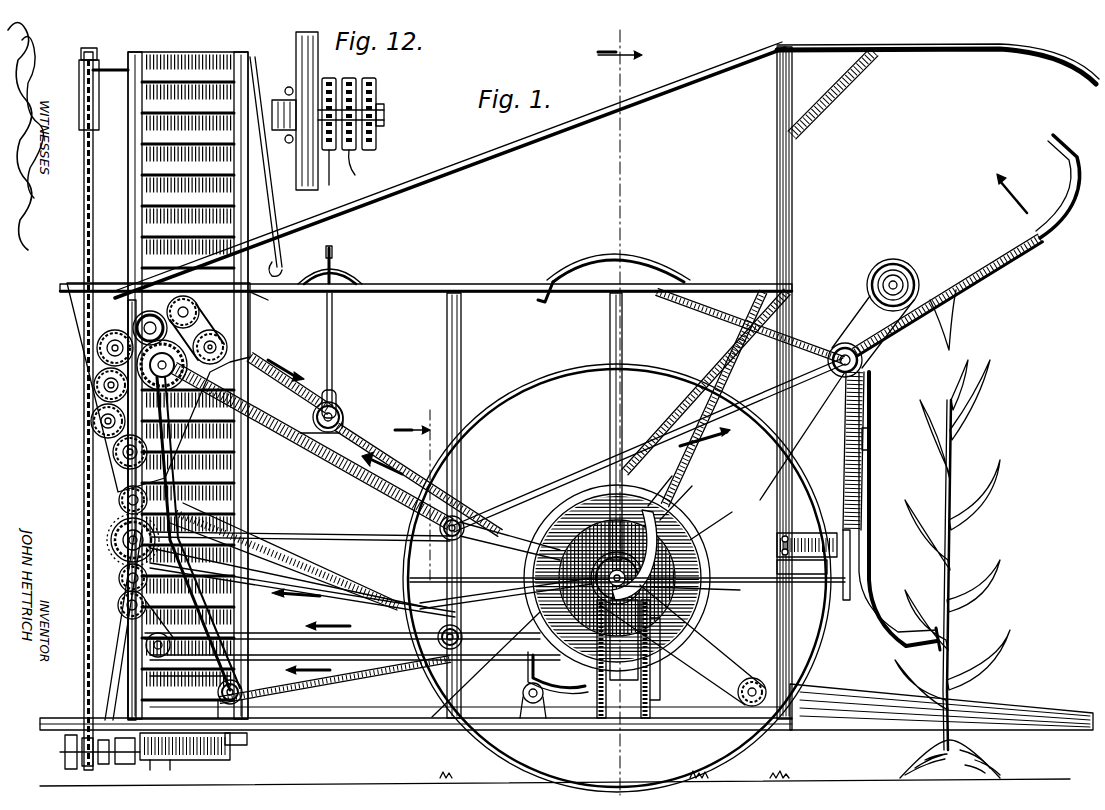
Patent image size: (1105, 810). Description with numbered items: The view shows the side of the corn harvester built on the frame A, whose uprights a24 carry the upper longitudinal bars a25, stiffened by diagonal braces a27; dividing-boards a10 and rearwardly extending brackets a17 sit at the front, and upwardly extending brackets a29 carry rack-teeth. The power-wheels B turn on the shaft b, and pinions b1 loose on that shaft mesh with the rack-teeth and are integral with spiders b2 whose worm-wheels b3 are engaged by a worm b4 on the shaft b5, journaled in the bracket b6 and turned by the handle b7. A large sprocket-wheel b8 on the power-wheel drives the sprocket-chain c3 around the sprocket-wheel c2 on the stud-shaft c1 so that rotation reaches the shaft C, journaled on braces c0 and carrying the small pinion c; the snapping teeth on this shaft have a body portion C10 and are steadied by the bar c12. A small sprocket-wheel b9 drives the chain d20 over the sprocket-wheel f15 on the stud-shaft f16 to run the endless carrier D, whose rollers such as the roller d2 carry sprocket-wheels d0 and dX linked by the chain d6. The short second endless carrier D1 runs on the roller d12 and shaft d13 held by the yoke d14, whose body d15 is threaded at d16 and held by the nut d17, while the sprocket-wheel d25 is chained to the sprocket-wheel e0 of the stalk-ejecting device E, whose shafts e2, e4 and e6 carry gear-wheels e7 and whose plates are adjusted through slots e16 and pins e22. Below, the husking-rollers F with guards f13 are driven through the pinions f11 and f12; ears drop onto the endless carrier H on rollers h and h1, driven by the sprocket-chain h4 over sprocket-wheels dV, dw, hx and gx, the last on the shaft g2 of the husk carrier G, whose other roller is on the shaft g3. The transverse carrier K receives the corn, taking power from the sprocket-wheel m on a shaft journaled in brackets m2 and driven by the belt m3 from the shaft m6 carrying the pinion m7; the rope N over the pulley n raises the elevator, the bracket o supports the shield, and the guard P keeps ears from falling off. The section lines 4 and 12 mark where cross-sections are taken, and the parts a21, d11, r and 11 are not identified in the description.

In FIG. 12, the frame A is at (300, 42).
In FIG. 1, the frame A is at (468, 282).
In FIG. 12, the hub of sprocket plate a21 is at (306, 174).
In FIG. 12, the rope N is at (312, 190).
In FIG. 12, the sprocket-wheel dV is at (378, 100).
In FIG. 1, the sprocket-wheel dV is at (460, 516).
In FIG. 12, the stud-shaft f16 is at (386, 118).
In FIG. 1, the stud-shaft f16 is at (118, 578).
In FIG. 12, the roller d2 is at (331, 177).
In FIG. 12, the sprocket-wheel dX is at (360, 170).
In FIG. 1, the section line 4 is at (620, 410).
In FIG. 1, the bracket o is at (700, 78).
In FIG. 1, the tooth portion C10 is at (1005, 260).
In FIG. 1, the shaft C is at (892, 340).
In FIG. 1, the pinion c is at (858, 386).
In FIG. 1, the stud-shaft c1 is at (893, 274).
In FIG. 1, the sprocket-wheel c2 is at (916, 274).
In FIG. 1, the sprocket-chain c3 is at (862, 366).
In FIG. 1, the braces c0 is at (854, 326).
In FIG. 1, the bar c12 is at (868, 448).
In FIG. 1, the diagonal braces a27 is at (726, 352).
In FIG. 1, the upper longitudinal bars a25 is at (396, 282).
In FIG. 1, the uprights a24 is at (446, 368).
In FIG. 1, the section line 12 is at (418, 488).
In FIG. 1, the pins e22 is at (84, 287).
In FIG. 1, the belt m3 is at (108, 668).
In FIG. 1, the pulley n is at (266, 166).
In FIG. 1, the stalk-ejecting device E is at (88, 330).
In FIG. 1, the shaft e2 is at (98, 334).
In FIG. 1, the shaft e4 is at (94, 386).
In FIG. 1, the gear-wheels e7 is at (92, 426).
In FIG. 1, the shaft e6 is at (112, 454).
In FIG. 1, the endless carrier D is at (148, 312).
In FIG. 1, the sprocket-wheel e0 is at (190, 304).
In FIG. 1, the sprocket d11 is at (203, 333).
In FIG. 1, the slots e16 is at (268, 300).
In FIG. 1, the screw-threaded portion d16 is at (324, 254).
In FIG. 1, the nut d17 is at (340, 268).
In FIG. 1, the yoke body d15 is at (334, 320).
In FIG. 1, the yoke d14 is at (336, 350).
In FIG. 1, the second endless carrier D1 is at (338, 394).
In FIG. 1, the roller d12 is at (346, 416).
In FIG. 1, the shaft d13 is at (342, 428).
In FIG. 1, the sprocket-wheel d25 is at (374, 438).
In FIG. 1, the chain d6 is at (298, 462).
In FIG. 1, the sprocket-wheel dw is at (198, 533).
In FIG. 1, the chain d20 is at (336, 532).
In FIG. 1, the pinion f11 is at (118, 498).
In FIG. 1, the pinion f12 is at (110, 534).
In FIG. 1, the sprocket-wheel f15 is at (108, 550).
In FIG. 1, the husking-rollers F is at (280, 550).
In FIG. 1, the guards f13 is at (360, 584).
In FIG. 1, the shaft m6 is at (121, 603).
In FIG. 1, the pinion m7 is at (118, 610).
In FIG. 1, the shaft g3 is at (145, 646).
In FIG. 1, the endless carrier G is at (282, 632).
In FIG. 1, the sprocket-wheel hx is at (355, 656).
In FIG. 1, the shaft g2 is at (269, 656).
In FIG. 1, the roller h1 is at (250, 710).
In FIG. 1, the sprocket-chain h4 is at (392, 712).
In FIG. 1, the sprocket-wheel gx is at (460, 644).
In FIG. 1, the power-wheels B is at (540, 400).
In FIG. 1, the sprocket-wheel b9 is at (572, 488).
In FIG. 1, the shaft b is at (686, 520).
In FIG. 1, the worm b4 is at (663, 482).
In FIG. 1, the pinions b1 is at (681, 496).
In FIG. 1, the spiders b2 is at (718, 519).
In FIG. 1, the worm-wheels b3 is at (735, 592).
In FIG. 1, the sprocket-wheel b8 is at (720, 616).
In FIG. 1, the sprocket-wheel d0 is at (754, 678).
In FIG. 1, the guard P is at (596, 716).
In FIG. 1, the brackets a29 is at (672, 700).
In FIG. 1, the roller h is at (534, 706).
In FIG. 1, the shaft b5 is at (800, 530).
In FIG. 1, the handle b7 is at (850, 532).
In FIG. 1, the bracket b6 is at (846, 602).
In FIG. 1, the brackets a17 is at (448, 730).
In FIG. 1, the endless carrier H is at (555, 763).
In FIG. 1, the dividing-boards a10 is at (990, 712).
In FIG. 1, the transverse endless carrier K is at (185, 757).
In FIG. 1, the sprocket-wheel m is at (100, 758).
In FIG. 1, the brackets m2 is at (248, 754).
In FIG. 1, the pin r is at (149, 772).
In FIG. 1, the pin 11 is at (167, 770).